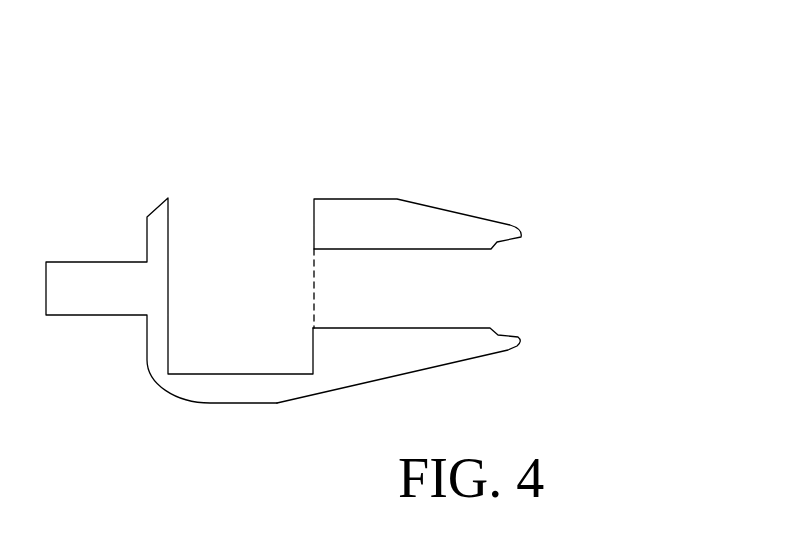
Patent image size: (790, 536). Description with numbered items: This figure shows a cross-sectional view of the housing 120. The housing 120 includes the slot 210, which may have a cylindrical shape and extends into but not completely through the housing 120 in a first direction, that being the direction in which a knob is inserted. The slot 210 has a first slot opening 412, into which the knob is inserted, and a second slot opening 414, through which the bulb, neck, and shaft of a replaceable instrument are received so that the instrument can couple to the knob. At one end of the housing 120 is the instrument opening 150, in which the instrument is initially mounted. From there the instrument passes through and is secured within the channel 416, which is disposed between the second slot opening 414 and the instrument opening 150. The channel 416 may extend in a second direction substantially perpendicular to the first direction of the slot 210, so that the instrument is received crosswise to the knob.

The housing 120 is at (352, 211).
The instrument opening 150 is at (492, 272).
The slot 210 is at (278, 222).
The first slot opening 412 is at (202, 248).
The second slot opening 414 is at (315, 267).
The channel 416 is at (440, 290).